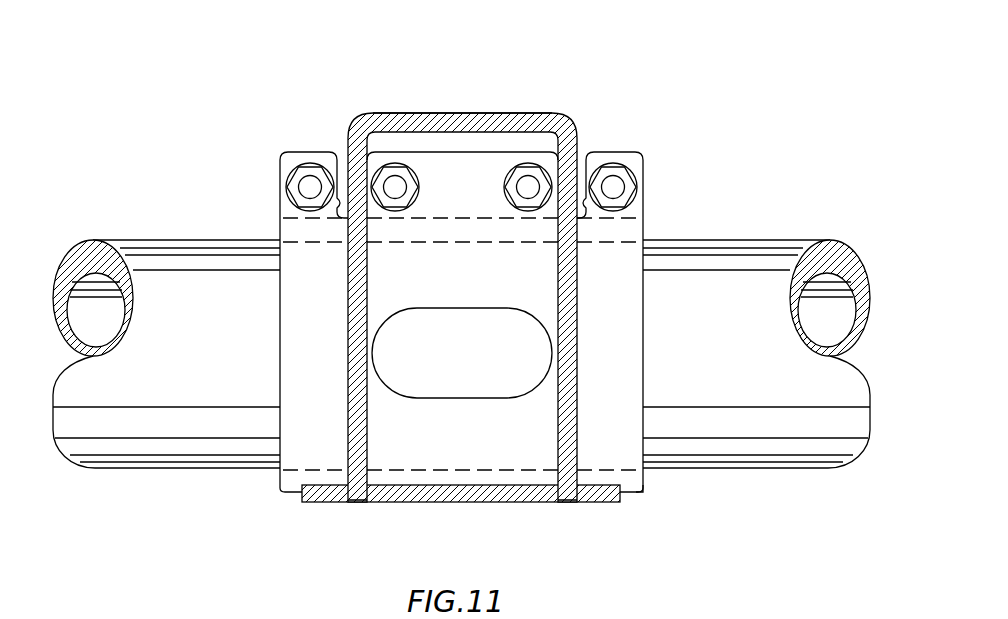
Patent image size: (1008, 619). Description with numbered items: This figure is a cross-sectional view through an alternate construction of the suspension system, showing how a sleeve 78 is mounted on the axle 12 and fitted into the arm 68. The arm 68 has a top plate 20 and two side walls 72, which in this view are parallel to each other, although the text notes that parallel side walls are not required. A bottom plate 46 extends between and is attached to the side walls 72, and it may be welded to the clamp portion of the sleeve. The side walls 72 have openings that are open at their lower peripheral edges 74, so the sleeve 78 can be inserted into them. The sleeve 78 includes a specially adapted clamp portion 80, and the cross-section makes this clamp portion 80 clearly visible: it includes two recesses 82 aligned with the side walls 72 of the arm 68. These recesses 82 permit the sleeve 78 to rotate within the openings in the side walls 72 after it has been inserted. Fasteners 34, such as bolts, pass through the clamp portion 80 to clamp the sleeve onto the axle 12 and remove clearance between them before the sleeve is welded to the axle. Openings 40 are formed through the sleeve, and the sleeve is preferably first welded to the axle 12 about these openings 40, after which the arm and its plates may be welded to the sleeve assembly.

The axle 12 is at (125, 240).
The top plate 20 is at (453, 257).
The fasteners 34 is at (387, 163).
The openings 40 is at (437, 398).
The bottom plate 46 is at (470, 502).
The arm 68 is at (543, 112).
The side walls 72 is at (348, 306).
The lower peripheral edges 74 is at (352, 500).
The sleeve 78 is at (645, 496).
The clamp portion 80 is at (459, 150).
The recesses 82 is at (336, 218).